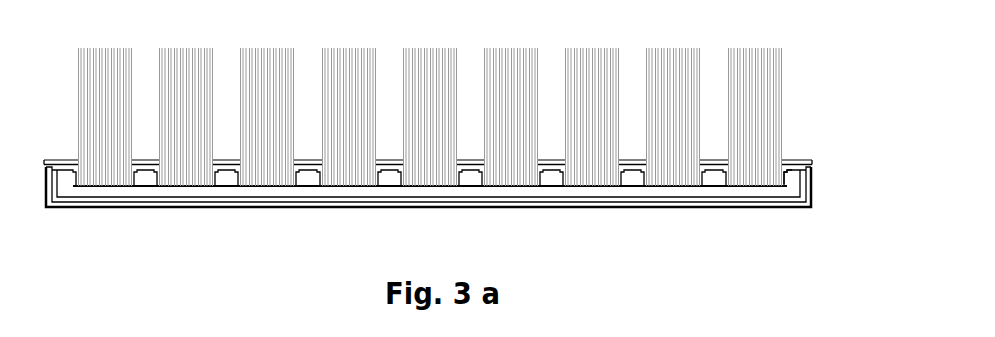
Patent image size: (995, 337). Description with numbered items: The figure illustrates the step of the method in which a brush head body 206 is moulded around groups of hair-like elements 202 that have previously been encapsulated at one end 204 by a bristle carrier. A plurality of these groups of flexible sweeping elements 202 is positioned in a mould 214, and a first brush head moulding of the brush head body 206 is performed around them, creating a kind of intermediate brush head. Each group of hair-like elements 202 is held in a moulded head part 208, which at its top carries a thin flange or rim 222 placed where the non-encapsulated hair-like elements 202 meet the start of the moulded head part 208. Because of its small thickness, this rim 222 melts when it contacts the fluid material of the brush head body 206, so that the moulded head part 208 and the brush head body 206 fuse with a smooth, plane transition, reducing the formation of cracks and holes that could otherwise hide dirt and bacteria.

The groups of hair-like elements 202 is at (427, 48).
The encapsulated end 204 is at (502, 178).
The brush head body 206 is at (267, 193).
The moulded head part 208 is at (428, 188).
The mould 214 is at (784, 160).
The thin flange or rim 222 is at (785, 173).